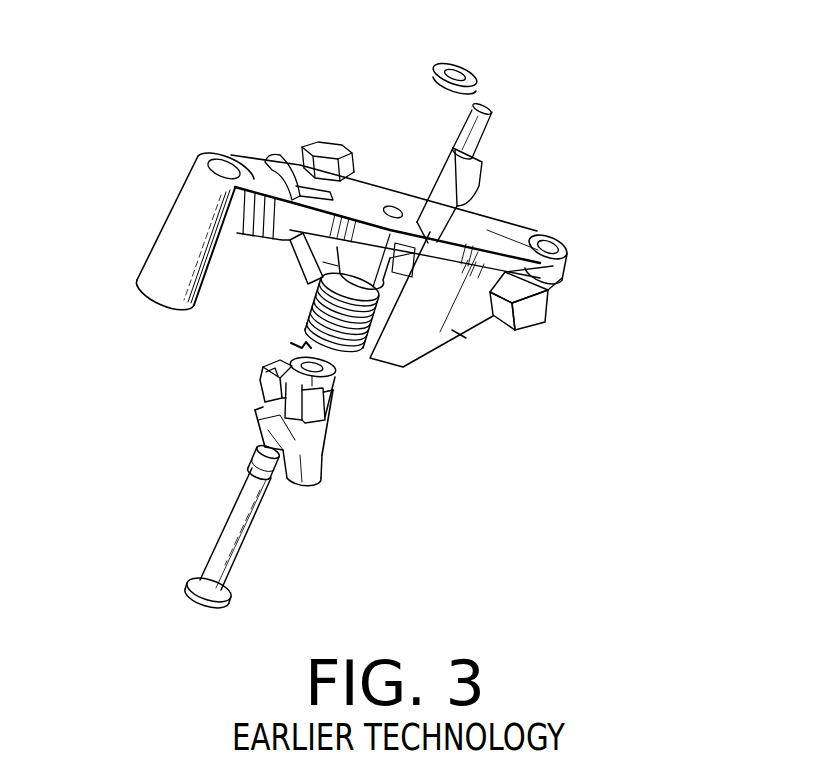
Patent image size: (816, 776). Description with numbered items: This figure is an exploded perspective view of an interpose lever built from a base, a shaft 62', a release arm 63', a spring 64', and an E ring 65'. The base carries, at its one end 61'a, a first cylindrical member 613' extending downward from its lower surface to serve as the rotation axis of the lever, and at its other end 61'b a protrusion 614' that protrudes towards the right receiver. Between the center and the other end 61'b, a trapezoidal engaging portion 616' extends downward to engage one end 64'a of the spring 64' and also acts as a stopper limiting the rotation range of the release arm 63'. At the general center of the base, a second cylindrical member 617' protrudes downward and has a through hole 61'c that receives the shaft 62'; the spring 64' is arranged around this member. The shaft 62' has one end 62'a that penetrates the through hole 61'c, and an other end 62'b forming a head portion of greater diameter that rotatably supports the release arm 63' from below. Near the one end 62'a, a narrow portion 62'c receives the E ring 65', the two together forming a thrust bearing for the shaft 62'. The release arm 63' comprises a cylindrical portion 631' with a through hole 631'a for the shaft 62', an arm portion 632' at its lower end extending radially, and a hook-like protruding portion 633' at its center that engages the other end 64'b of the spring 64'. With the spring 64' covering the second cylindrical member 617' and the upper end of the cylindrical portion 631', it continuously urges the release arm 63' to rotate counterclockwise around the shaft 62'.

The one end of the base 61'a is at (176, 144).
The other end of the base 61'b is at (587, 229).
The through hole 61'c is at (434, 172).
The first cylindrical member 613' is at (149, 231).
The protrusion 614' is at (570, 300).
The trapezoidal engaging portion 616' is at (463, 310).
The second cylindrical member 617' is at (352, 168).
The E ring 65' is at (485, 64).
The spring 64' is at (365, 346).
The one end of the spring 64'a is at (517, 380).
The other end of the spring 64'b is at (260, 328).
The cylindrical portion 631' is at (377, 405).
The through hole 631'a is at (222, 356).
The arm portion 632' is at (214, 422).
The hook-like protruding portion 633' is at (158, 393).
The release arm 63' is at (351, 468).
The shaft 62' is at (275, 529).
The one end of the shaft 62'a is at (220, 444).
The head portion 62'b is at (264, 598).
The narrow portion 62'c is at (315, 493).